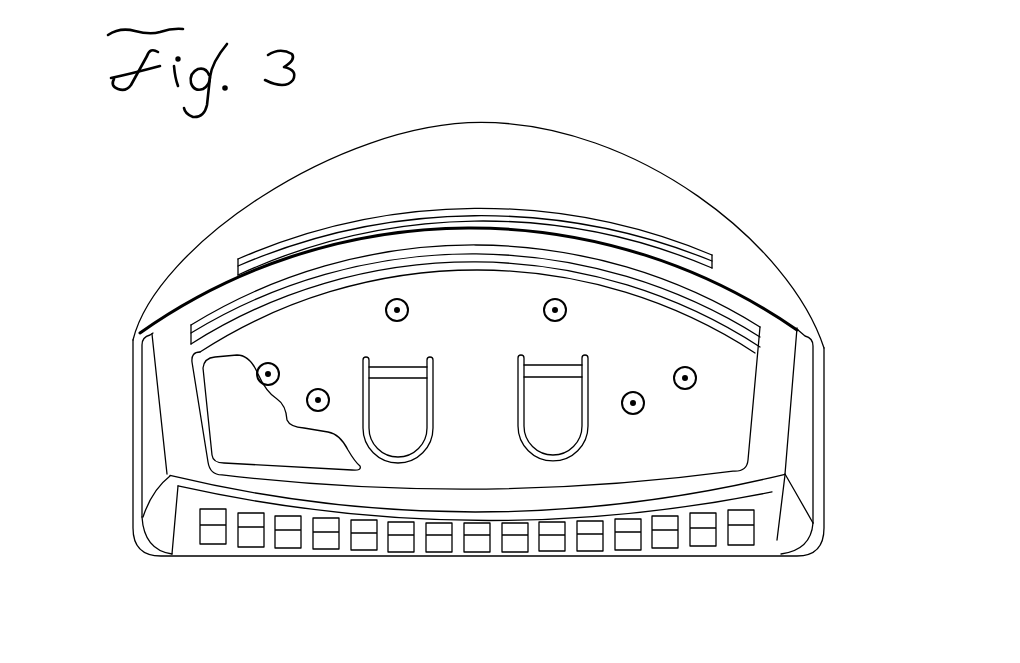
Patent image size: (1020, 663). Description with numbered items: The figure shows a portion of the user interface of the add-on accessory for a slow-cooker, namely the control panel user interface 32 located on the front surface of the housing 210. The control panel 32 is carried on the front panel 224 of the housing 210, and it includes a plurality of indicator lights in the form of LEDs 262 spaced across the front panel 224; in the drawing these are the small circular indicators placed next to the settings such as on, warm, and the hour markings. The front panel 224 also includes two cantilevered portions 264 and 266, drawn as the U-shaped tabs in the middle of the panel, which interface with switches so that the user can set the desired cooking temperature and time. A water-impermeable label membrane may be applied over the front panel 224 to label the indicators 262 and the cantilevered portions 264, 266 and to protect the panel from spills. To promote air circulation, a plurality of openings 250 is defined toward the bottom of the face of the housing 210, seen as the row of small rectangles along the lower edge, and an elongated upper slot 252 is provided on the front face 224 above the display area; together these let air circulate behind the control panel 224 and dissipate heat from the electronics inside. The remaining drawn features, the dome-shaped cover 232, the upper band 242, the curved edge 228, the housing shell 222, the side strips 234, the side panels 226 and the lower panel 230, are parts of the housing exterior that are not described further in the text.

The control panel user interface 32 is at (836, 213).
The housing 210 is at (777, 412).
The housing 222 is at (680, 203).
The front panel 224 is at (735, 368).
The side panel 226 is at (155, 462).
The front face upper edge 228 is at (752, 290).
The lower button panel 230 is at (767, 530).
The dome cover 232 is at (630, 173).
The side strip 234 is at (132, 383).
The raised band 242 is at (337, 226).
The openings 250 is at (628, 538).
The elongated upper slot 252 is at (710, 303).
The LEDs 262 is at (273, 365).
The cantilevered portion 264 is at (382, 446).
The cantilevered portion 266 is at (553, 448).